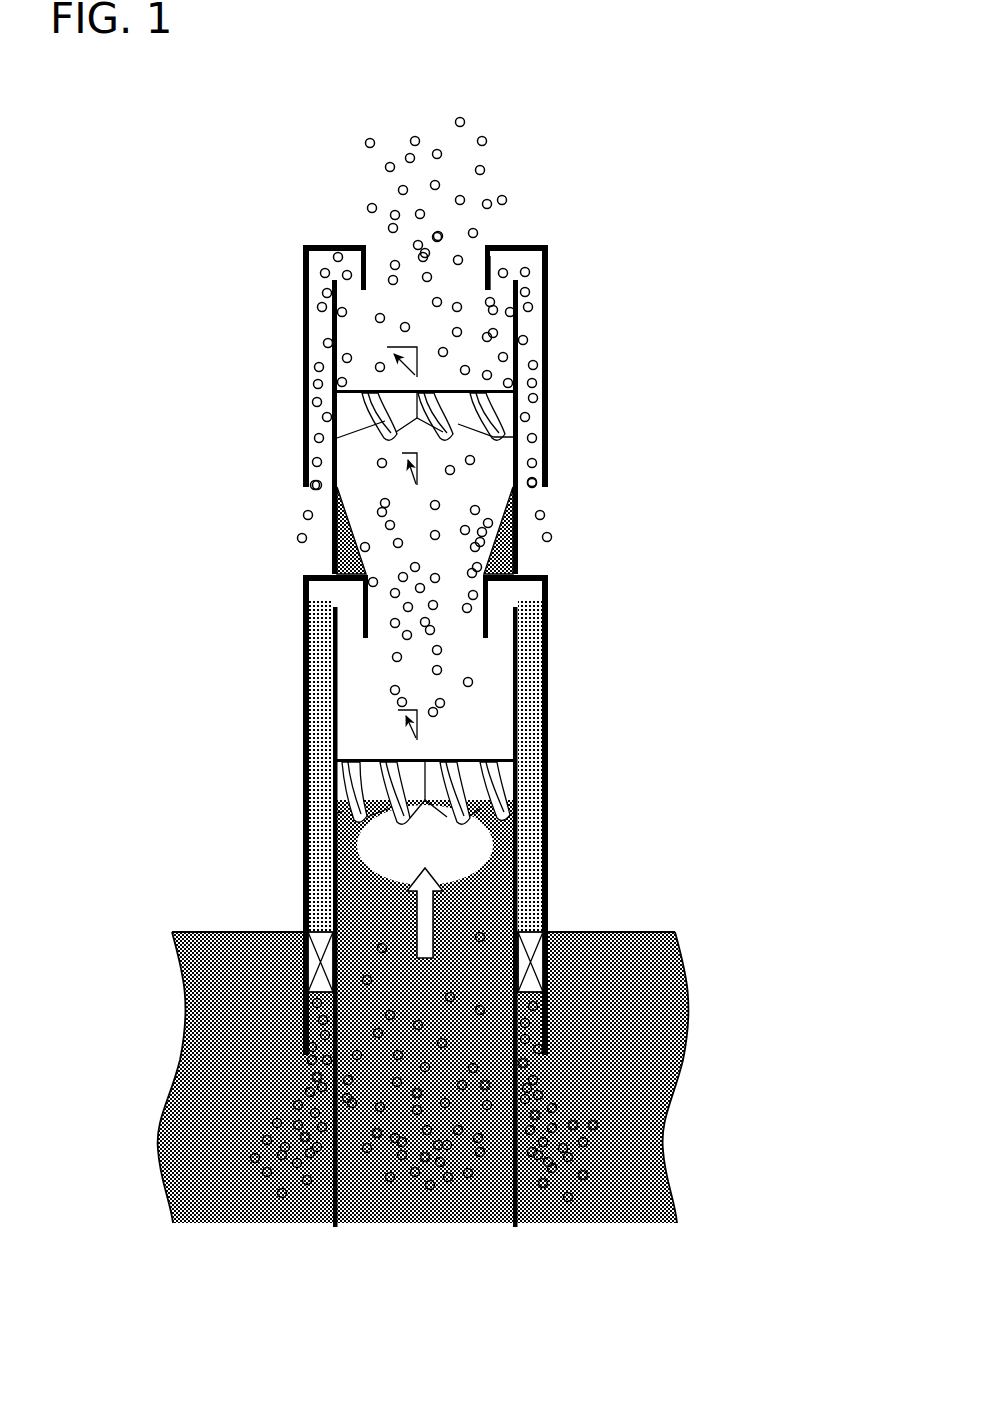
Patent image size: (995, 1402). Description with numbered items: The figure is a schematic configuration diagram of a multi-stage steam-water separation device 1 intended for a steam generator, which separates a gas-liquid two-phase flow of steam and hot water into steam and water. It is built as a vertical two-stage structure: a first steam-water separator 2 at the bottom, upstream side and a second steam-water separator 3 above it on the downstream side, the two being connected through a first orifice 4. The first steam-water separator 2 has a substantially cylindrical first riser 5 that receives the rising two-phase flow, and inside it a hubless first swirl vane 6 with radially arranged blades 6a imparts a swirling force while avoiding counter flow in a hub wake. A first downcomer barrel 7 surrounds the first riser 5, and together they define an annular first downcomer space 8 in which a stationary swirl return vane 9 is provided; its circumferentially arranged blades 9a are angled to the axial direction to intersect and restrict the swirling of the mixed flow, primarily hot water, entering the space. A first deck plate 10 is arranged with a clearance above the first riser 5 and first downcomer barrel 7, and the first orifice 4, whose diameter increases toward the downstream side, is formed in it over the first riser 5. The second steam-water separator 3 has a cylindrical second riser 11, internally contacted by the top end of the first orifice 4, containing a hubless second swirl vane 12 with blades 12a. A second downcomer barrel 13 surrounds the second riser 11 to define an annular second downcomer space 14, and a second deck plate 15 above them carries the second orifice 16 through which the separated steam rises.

The multi-stage steam-water separation device 1 is at (634, 252).
The first steam-water separator 2 is at (444, 881).
The second steam-water separator 3 is at (436, 371).
The first orifice 4 is at (498, 560).
The first riser 5 is at (519, 708).
The first swirl vane 6 is at (381, 761).
The blades 6a is at (412, 762).
The first downcomer barrel 7 is at (548, 843).
The first downcomer space 8 is at (316, 877).
The swirl return vane 9 is at (541, 962).
The blades 9a is at (530, 931).
The first deck plate 10 is at (318, 575).
The second riser 11 is at (333, 456).
The second swirl vane 12 is at (439, 395).
The blades 12a is at (483, 376).
The second downcomer barrel 13 is at (548, 462).
The second downcomer space 14 is at (317, 322).
The second deck plate 15 is at (336, 246).
The second orifice 16 is at (488, 266).